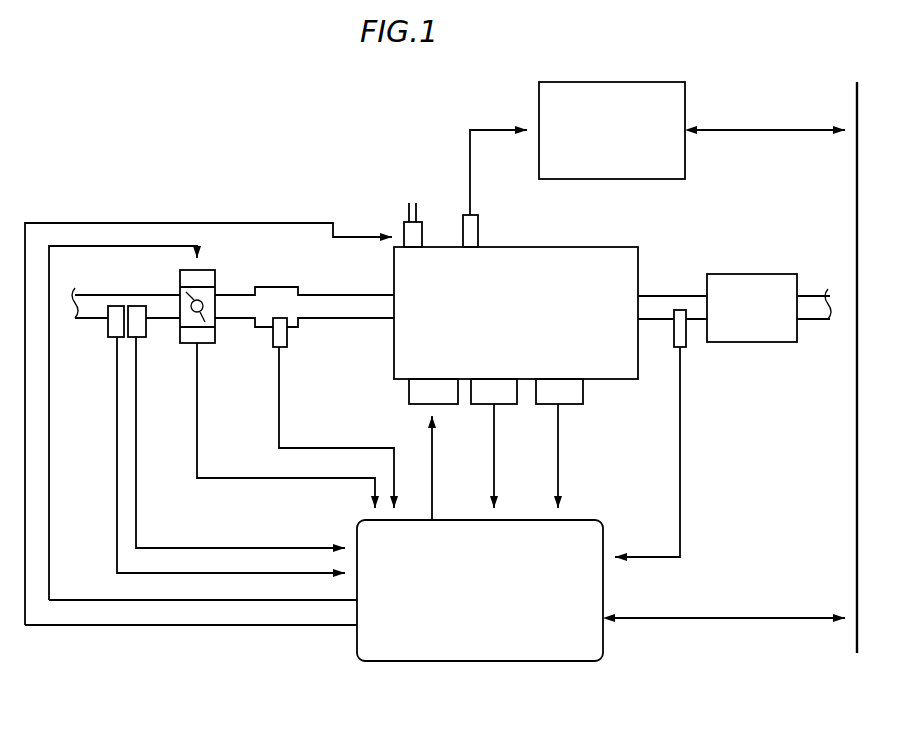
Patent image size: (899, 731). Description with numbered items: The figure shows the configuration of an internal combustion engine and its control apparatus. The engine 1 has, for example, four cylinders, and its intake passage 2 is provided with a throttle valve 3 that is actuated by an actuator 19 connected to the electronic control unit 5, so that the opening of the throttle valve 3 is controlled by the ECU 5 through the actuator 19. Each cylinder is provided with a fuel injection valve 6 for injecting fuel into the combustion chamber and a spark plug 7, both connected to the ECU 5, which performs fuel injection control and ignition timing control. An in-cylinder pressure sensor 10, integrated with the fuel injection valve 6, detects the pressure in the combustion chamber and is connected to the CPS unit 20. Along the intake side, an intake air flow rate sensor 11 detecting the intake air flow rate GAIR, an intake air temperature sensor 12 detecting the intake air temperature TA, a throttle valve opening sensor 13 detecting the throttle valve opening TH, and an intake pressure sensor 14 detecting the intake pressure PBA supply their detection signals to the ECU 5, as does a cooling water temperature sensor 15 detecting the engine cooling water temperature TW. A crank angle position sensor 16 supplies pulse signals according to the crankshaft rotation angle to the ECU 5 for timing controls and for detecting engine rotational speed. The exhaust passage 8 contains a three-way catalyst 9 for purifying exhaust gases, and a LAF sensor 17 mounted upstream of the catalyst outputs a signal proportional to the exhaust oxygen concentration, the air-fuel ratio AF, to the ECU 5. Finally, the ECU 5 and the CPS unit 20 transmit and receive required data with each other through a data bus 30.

The engine 1 is at (590, 247).
The intake passage 2 is at (337, 316).
The throttle valve 3 is at (188, 297).
The electronic control unit 5 is at (533, 520).
The fuel injection valve 6 is at (418, 221).
The spark plug 7 is at (448, 406).
The exhaust passage 8 is at (677, 295).
The three-way catalyst 9 is at (755, 274).
The in-cylinder pressure sensor 10 is at (478, 229).
The intake air flow rate sensor 11 is at (112, 337).
The intake air temperature sensor 12 is at (140, 337).
The throttle valve opening sensor 13 is at (208, 343).
The intake pressure sensor 14 is at (282, 347).
The cooling water temperature sensor 15 is at (509, 406).
The crank angle position sensor 16 is at (573, 406).
The LAF sensor 17 is at (683, 347).
The actuator 19 is at (205, 268).
The CPS unit 20 is at (597, 82).
The data bus 30 is at (857, 181).